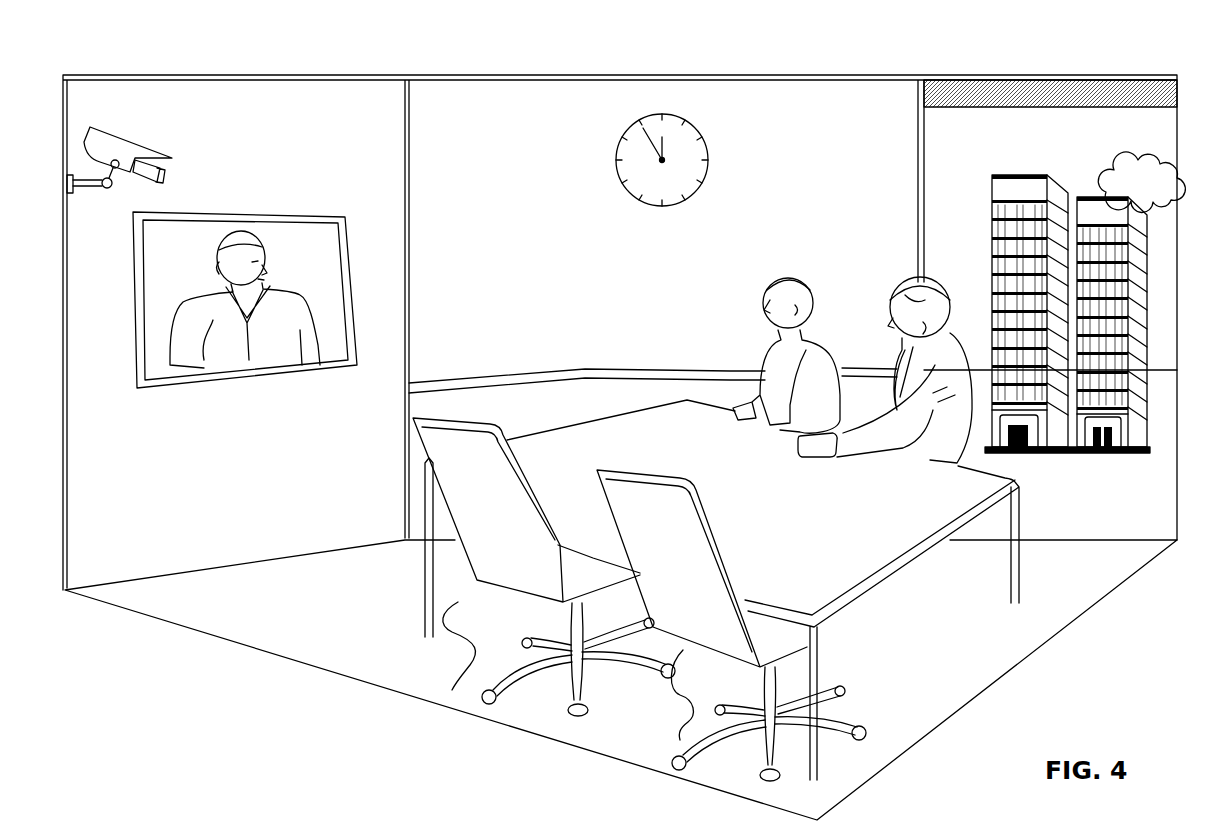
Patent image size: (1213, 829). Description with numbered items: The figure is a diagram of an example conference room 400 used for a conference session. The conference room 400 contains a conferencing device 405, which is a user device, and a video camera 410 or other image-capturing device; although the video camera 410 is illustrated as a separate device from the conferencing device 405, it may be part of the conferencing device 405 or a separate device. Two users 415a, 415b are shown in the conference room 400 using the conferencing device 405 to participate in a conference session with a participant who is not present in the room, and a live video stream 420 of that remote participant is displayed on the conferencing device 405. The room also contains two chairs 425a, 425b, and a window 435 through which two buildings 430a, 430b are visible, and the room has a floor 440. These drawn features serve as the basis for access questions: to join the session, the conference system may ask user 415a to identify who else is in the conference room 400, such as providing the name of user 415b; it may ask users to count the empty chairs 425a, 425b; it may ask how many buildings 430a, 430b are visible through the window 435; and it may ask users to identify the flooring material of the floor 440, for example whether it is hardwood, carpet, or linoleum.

The conference room 400 is at (574, 62).
The conferencing device 405 is at (202, 200).
The video camera 410 is at (115, 128).
The user 415a is at (792, 265).
The user 415b is at (908, 280).
The live video stream 420 is at (272, 243).
The chair 425a is at (502, 543).
The chair 425b is at (720, 628).
The building 430a is at (1028, 168).
The building 430b is at (1082, 190).
The window 435 is at (983, 123).
The floor 440 is at (287, 627).